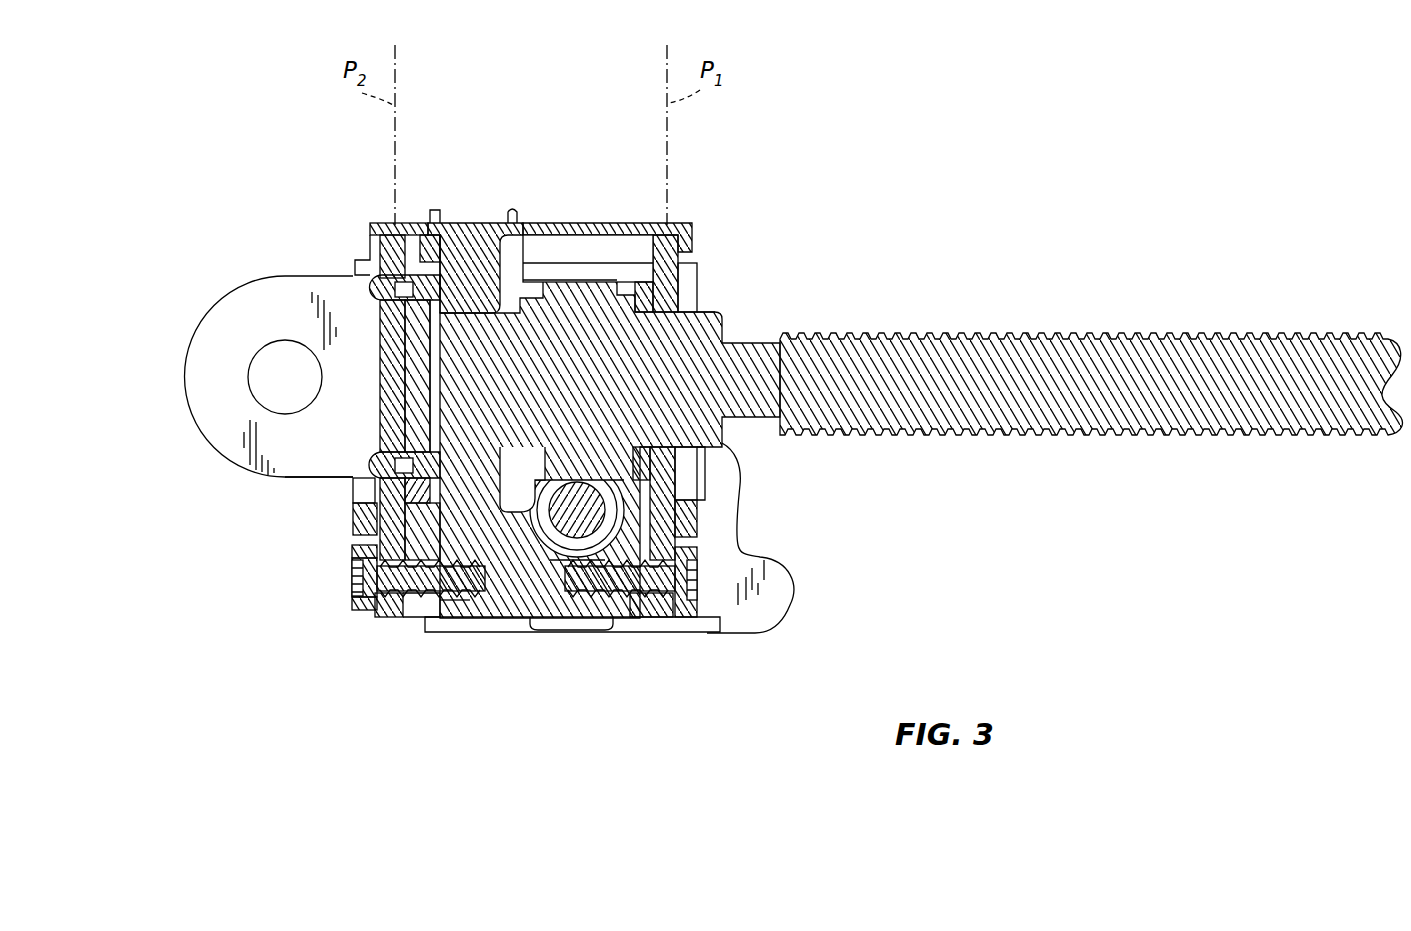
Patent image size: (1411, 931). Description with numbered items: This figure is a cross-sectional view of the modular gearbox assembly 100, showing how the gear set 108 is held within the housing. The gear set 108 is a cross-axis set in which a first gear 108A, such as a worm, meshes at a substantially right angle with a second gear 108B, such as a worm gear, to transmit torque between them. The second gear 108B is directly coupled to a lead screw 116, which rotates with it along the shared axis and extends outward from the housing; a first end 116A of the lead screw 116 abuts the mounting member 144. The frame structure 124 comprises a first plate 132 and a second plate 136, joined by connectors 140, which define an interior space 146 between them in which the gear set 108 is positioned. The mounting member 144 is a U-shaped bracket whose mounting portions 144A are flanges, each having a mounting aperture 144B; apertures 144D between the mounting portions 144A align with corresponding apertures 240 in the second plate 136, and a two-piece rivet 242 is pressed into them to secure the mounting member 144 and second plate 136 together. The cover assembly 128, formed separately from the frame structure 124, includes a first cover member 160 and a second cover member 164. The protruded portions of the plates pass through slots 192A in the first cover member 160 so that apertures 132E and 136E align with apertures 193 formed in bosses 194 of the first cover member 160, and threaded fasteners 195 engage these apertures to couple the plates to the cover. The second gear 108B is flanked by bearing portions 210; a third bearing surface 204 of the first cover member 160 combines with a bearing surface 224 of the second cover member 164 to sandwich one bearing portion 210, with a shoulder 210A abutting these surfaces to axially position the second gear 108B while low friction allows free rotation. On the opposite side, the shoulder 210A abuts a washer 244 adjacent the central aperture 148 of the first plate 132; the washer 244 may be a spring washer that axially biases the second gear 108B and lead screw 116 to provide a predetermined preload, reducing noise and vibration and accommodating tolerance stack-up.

The modular gearbox assembly 100 is at (805, 163).
The gear set 108 is at (652, 602).
The first gear 108A is at (530, 620).
The second gear 108B is at (612, 262).
The lead screw 116 is at (1045, 340).
The first end of the lead screw 116A is at (490, 300).
The frame structure 124 is at (397, 233).
The cover assembly 128 is at (470, 222).
The first plate 132 is at (695, 240).
The aperture of the first plate protruded portion 132E is at (683, 613).
The second plate 136 is at (378, 228).
The aperture of the second plate protruded portion 136E is at (390, 598).
The connectors 140 is at (690, 300).
The mounting member 144 is at (437, 350).
The mounting portions 144A is at (215, 327).
The mounting aperture 144B is at (280, 417).
The apertures of the mounting member 144D is at (356, 572).
The interior space 146 is at (628, 225).
The aperture of the first plate 148 is at (690, 268).
The first cover member 160 is at (500, 610).
The second cover member 164 is at (678, 228).
The slots 192A is at (362, 532).
The apertures of the first cover member 193 is at (415, 600).
The bosses 194 is at (580, 620).
The fasteners 195 is at (356, 610).
The third bearing surface 204 is at (437, 600).
The bearing portions 210 is at (722, 322).
The shoulder 210A is at (540, 318).
The bearing surface 224 is at (500, 300).
The apertures of the second plate 240 is at (358, 520).
The rivet 242 is at (368, 462).
The washer 244 is at (700, 478).